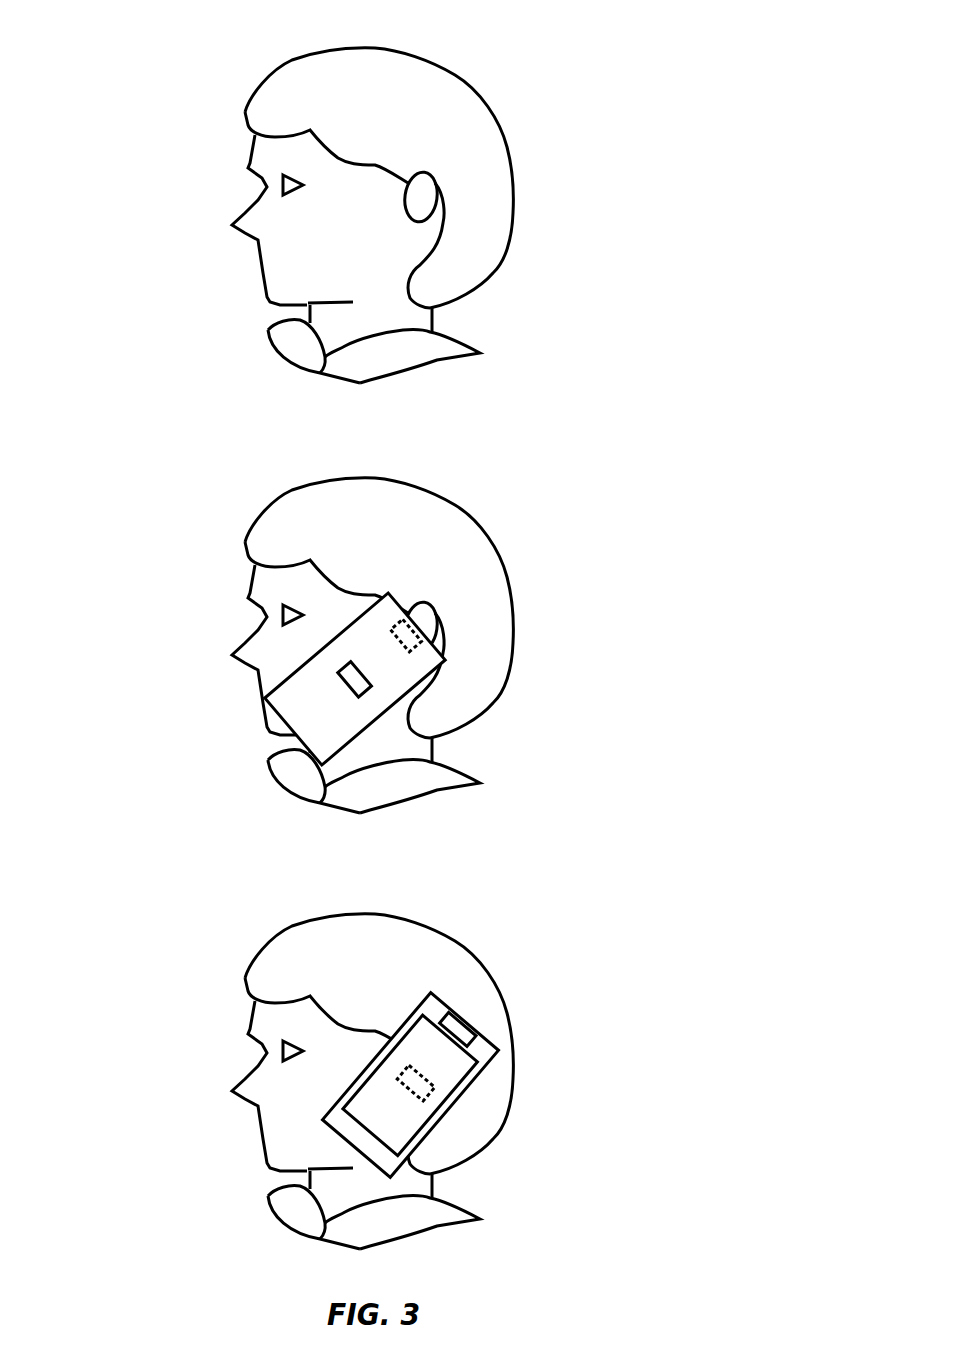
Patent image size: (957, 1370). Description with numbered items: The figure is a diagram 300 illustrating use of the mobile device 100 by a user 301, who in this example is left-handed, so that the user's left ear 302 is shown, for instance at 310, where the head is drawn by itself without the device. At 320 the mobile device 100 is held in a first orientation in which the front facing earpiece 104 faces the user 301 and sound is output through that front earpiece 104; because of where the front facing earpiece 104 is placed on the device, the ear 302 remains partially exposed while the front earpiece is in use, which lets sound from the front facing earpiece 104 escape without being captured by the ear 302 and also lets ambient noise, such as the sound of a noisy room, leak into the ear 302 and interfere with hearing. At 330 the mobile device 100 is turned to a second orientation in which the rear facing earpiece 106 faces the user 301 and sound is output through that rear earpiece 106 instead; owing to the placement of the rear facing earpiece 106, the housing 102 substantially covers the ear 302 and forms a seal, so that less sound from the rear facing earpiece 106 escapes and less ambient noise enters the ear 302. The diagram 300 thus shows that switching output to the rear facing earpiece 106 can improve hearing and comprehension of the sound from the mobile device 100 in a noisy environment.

The mobile device 100 is at (367, 917).
The housing 102 is at (323, 747).
The front facing earpiece 104 is at (468, 1028).
The rear facing earpiece 106 is at (355, 687).
The diagram 300 is at (716, 65).
The user 301 is at (345, 646).
The left ear 302 is at (407, 612).
The first view 310 is at (118, 180).
The second view 320 is at (118, 560).
The third view 330 is at (118, 998).